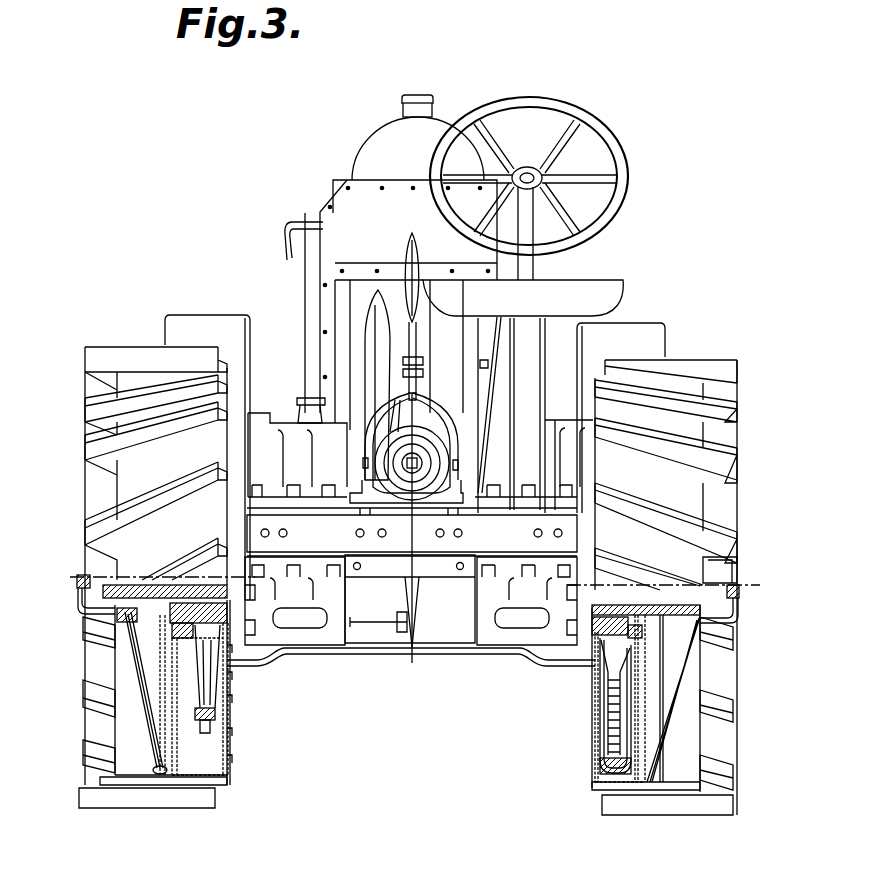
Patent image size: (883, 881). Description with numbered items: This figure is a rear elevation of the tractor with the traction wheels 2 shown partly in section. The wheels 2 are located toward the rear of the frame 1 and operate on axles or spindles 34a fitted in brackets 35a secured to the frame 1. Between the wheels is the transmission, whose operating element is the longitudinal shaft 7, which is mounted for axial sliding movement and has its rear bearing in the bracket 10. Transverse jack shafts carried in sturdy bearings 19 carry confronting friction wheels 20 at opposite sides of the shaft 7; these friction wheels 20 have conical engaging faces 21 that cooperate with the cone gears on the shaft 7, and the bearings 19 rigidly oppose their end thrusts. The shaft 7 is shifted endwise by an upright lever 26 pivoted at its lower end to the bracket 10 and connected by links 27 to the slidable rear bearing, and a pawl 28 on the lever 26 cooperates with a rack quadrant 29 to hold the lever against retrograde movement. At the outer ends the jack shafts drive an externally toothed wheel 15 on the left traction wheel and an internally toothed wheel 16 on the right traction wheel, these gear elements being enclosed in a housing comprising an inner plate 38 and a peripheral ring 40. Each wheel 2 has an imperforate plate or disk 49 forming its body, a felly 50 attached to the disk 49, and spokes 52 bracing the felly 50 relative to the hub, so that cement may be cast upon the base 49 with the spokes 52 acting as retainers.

The frame 1 is at (412, 532).
The traction wheels 2 is at (163, 740).
The shaft 7 is at (408, 463).
The bracket 10 is at (387, 446).
The externally toothed concentric wheel 15 is at (217, 712).
The internally toothed concentric wheel 16 is at (600, 758).
The bearings 19 is at (287, 428).
The friction wheels 20 is at (375, 312).
The conical engaging faces 21 is at (386, 345).
The upright lever 26 is at (405, 247).
The links 27 is at (457, 440).
The pawl 28 is at (423, 372).
The rack quadrant 29 is at (418, 393).
The axles or spindles 34a is at (107, 588).
The brackets 35a is at (510, 684).
The inner plate 38 is at (223, 740).
The peripheral ring 40 is at (210, 787).
The plate or disk 49 is at (162, 688).
The felly 50 is at (188, 790).
The spokes 52 is at (137, 657).